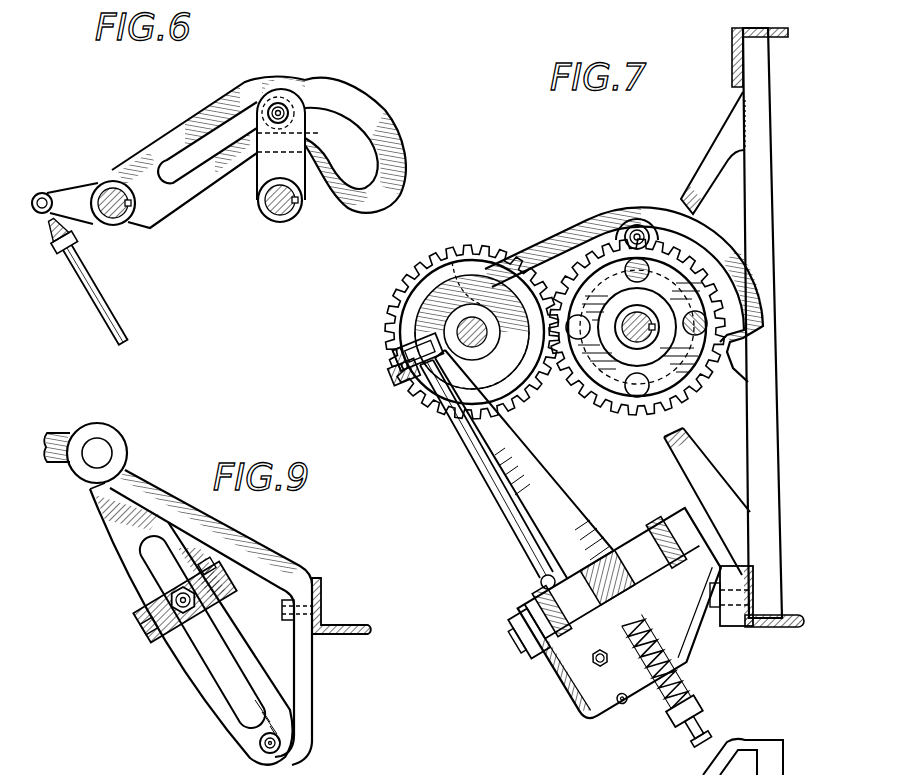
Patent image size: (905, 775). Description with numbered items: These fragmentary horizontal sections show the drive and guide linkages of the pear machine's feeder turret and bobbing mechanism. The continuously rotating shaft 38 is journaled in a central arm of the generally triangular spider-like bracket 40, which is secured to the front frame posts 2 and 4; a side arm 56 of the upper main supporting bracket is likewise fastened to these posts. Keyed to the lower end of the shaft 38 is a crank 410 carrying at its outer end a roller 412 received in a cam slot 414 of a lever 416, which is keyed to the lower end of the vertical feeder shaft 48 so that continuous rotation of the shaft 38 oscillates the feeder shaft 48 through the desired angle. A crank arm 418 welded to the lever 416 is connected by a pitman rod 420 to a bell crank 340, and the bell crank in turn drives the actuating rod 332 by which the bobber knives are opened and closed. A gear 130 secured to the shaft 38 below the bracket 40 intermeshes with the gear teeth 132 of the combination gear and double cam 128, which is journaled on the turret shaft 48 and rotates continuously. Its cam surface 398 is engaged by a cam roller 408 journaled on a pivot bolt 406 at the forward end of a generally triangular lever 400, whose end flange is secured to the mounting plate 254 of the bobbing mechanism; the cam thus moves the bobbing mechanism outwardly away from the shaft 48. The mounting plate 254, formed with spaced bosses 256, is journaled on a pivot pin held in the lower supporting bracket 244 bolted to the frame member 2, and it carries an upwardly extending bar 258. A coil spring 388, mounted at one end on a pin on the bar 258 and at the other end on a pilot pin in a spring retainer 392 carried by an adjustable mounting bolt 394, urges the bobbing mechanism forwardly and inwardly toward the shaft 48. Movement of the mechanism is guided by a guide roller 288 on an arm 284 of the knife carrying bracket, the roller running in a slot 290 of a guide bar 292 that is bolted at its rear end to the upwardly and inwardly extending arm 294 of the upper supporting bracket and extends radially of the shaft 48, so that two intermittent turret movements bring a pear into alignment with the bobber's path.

In FIG. 7, the front frame post 2 is at (772, 633).
In FIG. 9, the front frame post 2 is at (343, 623).
In FIG. 7, the front frame post 4 is at (732, 48).
In FIG. 6, the shaft 38 is at (279, 222).
In FIG. 7, the shaft 38 is at (622, 338).
In FIG. 7, the spider-like bracket 40 is at (716, 160).
In FIG. 6, the feeder shaft 48 is at (118, 215).
In FIG. 9, the feeder shaft 48 is at (100, 453).
In FIG. 9, the side arm 56 is at (281, 563).
In FIG. 7, the combination gear and double cam 128 is at (541, 226).
In FIG. 7, the gear 130 is at (600, 405).
In FIG. 7, the gear teeth 132 is at (395, 290).
In FIG. 7, the lower supporting bracket 244 is at (600, 697).
In FIG. 7, the mounting plate 254 is at (556, 638).
In FIG. 7, the bosses 256 is at (653, 530).
In FIG. 7, the bar 258 is at (573, 647).
In FIG. 9, the arm 284 is at (193, 630).
In FIG. 9, the guide roller 288 is at (170, 598).
In FIG. 9, the slot 290 is at (230, 683).
In FIG. 9, the guide bar 292 is at (123, 530).
In FIG. 9, the arm 294 is at (307, 673).
In FIG. 7, the actuating rod 332 is at (593, 660).
In FIG. 7, the bell crank 340 is at (638, 511).
In FIG. 7, the coil spring 388 is at (648, 636).
In FIG. 7, the spring retainer 392 is at (683, 673).
In FIG. 7, the adjustable mounting bolt 394 is at (785, 714).
In FIG. 7, the cam surface 398 is at (428, 270).
In FIG. 7, the triangular lever 400 is at (625, 487).
In FIG. 7, the pivot bolt 406 is at (392, 377).
In FIG. 7, the cam roller 408 is at (394, 355).
In FIG. 6, the crank 410 is at (300, 128).
In FIG. 6, the roller 412 is at (369, 74).
In FIG. 7, the roller 412 is at (637, 224).
In FIG. 6, the cam slot 414 is at (193, 165).
In FIG. 7, the cam slot 414 is at (625, 204).
In FIG. 6, the lever 416 is at (183, 109).
In FIG. 7, the lever 416 is at (550, 240).
In FIG. 6, the crank arm 418 is at (118, 156).
In FIG. 7, the crank arm 418 is at (488, 226).
In FIG. 6, the pitman rod 420 is at (100, 303).
In FIG. 7, the pitman rod 420 is at (487, 480).